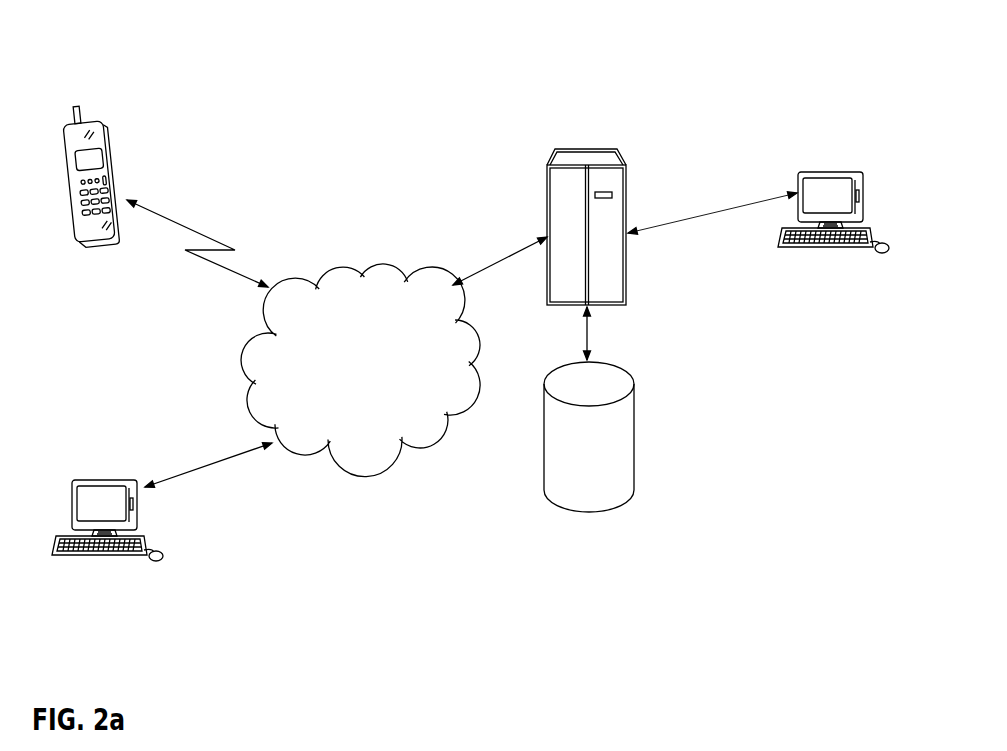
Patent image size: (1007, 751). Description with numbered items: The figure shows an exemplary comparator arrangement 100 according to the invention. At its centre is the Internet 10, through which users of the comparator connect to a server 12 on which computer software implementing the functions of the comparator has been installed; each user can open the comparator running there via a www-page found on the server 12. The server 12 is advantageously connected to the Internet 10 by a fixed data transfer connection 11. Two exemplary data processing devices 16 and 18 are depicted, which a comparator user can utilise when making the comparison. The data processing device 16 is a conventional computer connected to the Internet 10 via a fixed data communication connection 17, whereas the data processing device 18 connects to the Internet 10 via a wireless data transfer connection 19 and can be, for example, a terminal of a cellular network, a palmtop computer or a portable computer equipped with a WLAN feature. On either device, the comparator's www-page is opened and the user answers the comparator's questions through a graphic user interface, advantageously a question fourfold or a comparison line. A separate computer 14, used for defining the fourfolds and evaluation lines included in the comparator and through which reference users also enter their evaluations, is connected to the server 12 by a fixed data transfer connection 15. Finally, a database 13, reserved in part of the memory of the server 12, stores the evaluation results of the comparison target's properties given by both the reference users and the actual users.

The comparator arrangement 100 is at (382, 142).
The Internet 10 is at (400, 453).
The fixed data transfer connection 11 is at (500, 256).
The server 12 is at (590, 160).
The database 13 is at (607, 492).
The computer 14 is at (830, 242).
The fixed data transfer connection 15 is at (712, 206).
The data processing device 16 is at (92, 555).
The fixed data communication connection 17 is at (208, 462).
The data processing device 18 is at (90, 240).
The wireless data transfer connection 19 is at (197, 243).